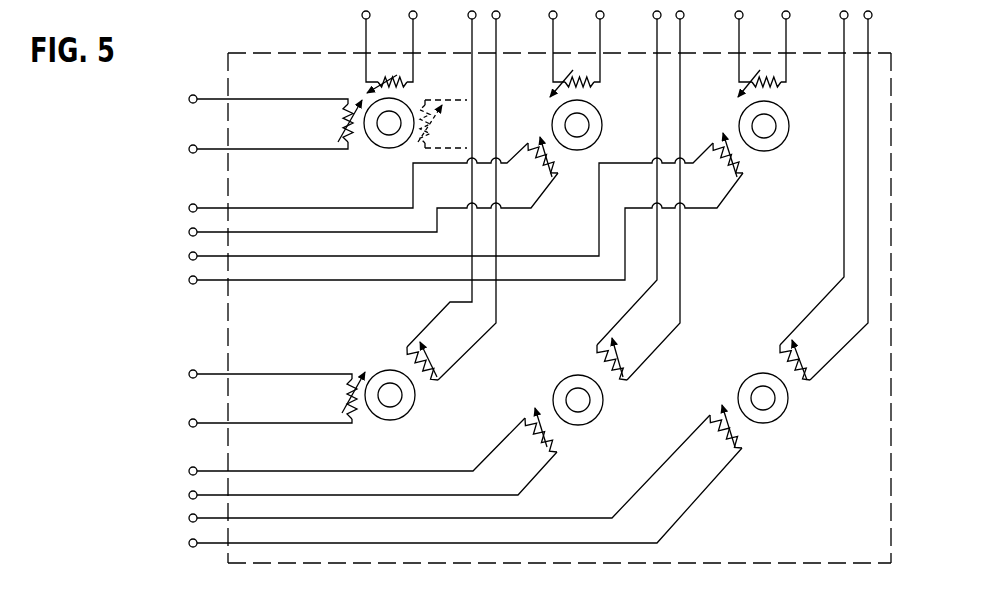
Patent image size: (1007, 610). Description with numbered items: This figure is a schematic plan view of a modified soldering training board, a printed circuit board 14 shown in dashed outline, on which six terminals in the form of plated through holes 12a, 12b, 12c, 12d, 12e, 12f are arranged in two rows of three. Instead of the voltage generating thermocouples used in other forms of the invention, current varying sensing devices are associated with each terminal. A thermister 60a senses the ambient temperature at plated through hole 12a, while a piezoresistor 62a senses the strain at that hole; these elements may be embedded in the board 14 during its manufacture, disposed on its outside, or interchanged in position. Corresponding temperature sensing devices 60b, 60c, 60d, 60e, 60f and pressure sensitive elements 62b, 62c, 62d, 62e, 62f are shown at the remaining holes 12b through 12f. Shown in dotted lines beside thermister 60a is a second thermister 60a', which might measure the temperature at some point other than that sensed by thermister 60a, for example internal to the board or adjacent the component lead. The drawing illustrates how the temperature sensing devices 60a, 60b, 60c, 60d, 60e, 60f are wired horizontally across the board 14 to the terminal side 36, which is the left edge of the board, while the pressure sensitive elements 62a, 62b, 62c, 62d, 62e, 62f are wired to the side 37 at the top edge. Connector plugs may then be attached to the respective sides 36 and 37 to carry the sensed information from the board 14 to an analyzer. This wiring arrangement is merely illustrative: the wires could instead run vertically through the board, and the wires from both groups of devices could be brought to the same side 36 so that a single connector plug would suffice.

The printed circuit board 14 is at (810, 538).
The terminal side 36 is at (228, 338).
The side 37 is at (288, 52).
The plated through hole 12a is at (390, 128).
The plated through hole 12b is at (578, 125).
The plated through hole 12c is at (765, 126).
The plated through hole 12d is at (390, 395).
The plated through hole 12e is at (579, 400).
The plated through hole 12f is at (764, 398).
The thermister 60a is at (337, 144).
The second thermister 60a' is at (442, 108).
The temperature sensing device 60b is at (559, 176).
The temperature sensing device 60c is at (744, 162).
The temperature sensing device 60d is at (350, 382).
The temperature sensing device 60e is at (550, 427).
The temperature sensing device 60f is at (743, 428).
The piezoresistor 62a is at (377, 78).
The pressure sensitive element 62b is at (566, 78).
The pressure sensitive element 62c is at (752, 78).
The pressure sensitive element 62d is at (413, 358).
The pressure sensitive element 62e is at (603, 360).
The pressure sensitive element 62f is at (783, 362).